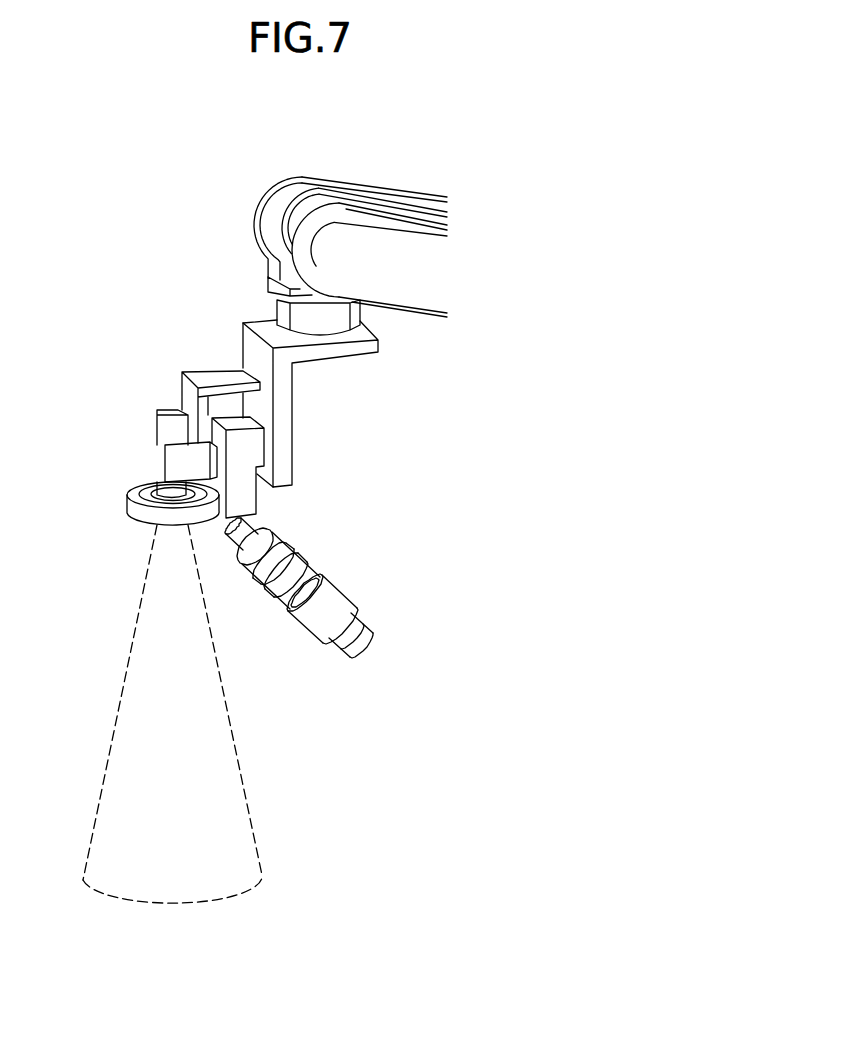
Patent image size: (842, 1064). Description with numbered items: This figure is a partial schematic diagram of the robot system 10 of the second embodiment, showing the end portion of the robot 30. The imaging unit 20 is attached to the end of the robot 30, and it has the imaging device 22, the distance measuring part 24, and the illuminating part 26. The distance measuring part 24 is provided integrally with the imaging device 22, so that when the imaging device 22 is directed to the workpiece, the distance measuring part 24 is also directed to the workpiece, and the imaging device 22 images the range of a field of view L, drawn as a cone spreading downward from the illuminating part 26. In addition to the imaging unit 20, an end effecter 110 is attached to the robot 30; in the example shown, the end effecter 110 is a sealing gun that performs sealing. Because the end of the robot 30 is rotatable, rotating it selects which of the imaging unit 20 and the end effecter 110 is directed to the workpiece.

The robot system 10 is at (450, 130).
The robot 30 is at (350, 179).
The imaging unit 20 is at (106, 394).
The imaging device 22 is at (171, 411).
The distance measuring part 24 is at (178, 464).
The illuminating part 26 is at (138, 511).
The end effecter 110 is at (341, 598).
The field of view L is at (120, 803).